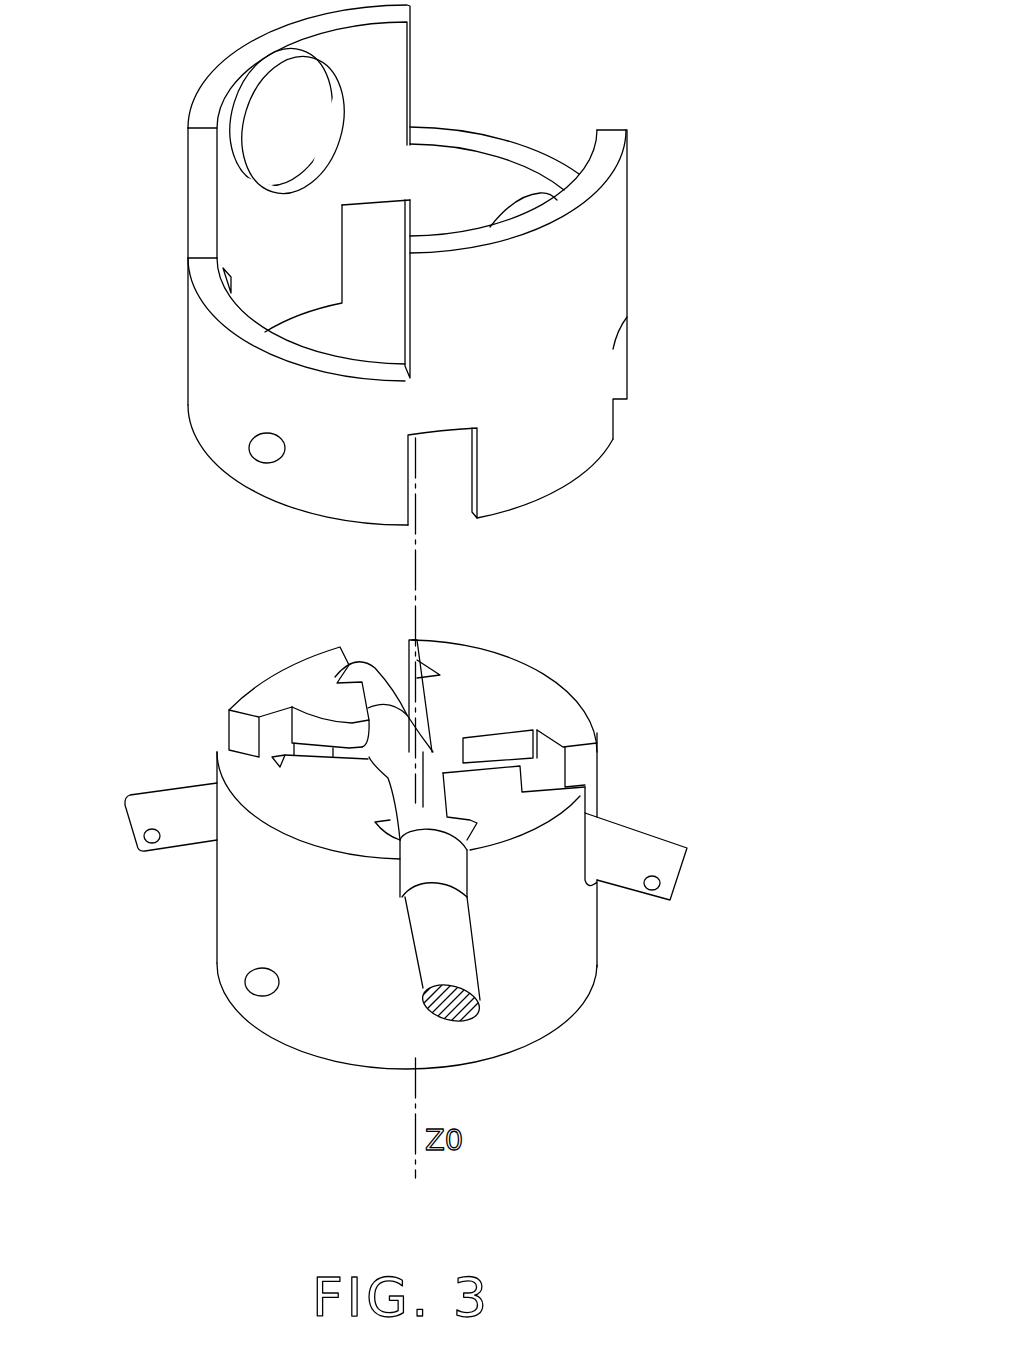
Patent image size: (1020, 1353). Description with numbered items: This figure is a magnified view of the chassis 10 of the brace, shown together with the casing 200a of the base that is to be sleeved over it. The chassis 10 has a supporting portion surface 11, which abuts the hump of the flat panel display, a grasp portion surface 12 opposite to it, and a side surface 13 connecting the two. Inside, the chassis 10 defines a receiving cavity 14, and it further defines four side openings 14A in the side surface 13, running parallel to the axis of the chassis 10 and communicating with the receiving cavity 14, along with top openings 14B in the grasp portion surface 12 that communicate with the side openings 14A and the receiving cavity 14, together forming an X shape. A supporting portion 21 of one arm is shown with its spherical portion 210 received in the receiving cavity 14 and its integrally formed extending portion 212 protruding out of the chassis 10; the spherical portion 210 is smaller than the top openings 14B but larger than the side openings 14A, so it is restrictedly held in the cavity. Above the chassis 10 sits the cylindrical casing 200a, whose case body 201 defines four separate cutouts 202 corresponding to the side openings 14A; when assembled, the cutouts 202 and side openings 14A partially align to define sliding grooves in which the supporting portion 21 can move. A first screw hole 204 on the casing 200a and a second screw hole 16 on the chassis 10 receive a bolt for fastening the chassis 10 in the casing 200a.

The casing 200a is at (588, 100).
The case body 201 is at (598, 244).
The cutout 202 is at (440, 493).
The first screw hole 204 is at (263, 446).
The chassis 10 is at (633, 810).
The supporting portion surface 11 is at (392, 1073).
The grasp portion surface 12 is at (297, 680).
The side surface 13 is at (253, 910).
The receiving cavity 14 is at (423, 807).
The side opening 14A is at (582, 767).
The top opening 14B is at (547, 767).
The second screw hole 16 is at (260, 982).
The supporting portion 21 is at (668, 938).
The spherical portion 210 is at (452, 872).
The extending portion 212 is at (448, 947).